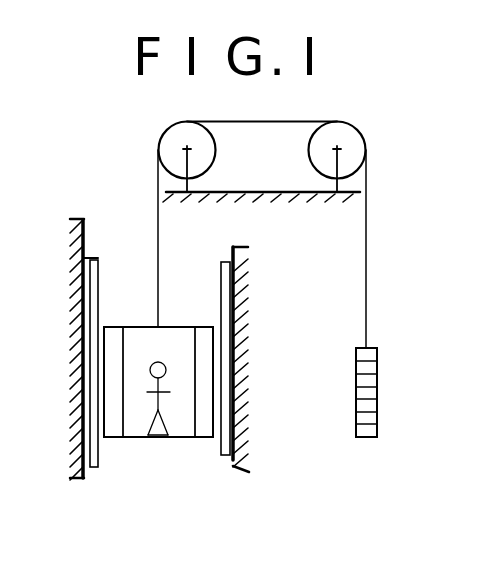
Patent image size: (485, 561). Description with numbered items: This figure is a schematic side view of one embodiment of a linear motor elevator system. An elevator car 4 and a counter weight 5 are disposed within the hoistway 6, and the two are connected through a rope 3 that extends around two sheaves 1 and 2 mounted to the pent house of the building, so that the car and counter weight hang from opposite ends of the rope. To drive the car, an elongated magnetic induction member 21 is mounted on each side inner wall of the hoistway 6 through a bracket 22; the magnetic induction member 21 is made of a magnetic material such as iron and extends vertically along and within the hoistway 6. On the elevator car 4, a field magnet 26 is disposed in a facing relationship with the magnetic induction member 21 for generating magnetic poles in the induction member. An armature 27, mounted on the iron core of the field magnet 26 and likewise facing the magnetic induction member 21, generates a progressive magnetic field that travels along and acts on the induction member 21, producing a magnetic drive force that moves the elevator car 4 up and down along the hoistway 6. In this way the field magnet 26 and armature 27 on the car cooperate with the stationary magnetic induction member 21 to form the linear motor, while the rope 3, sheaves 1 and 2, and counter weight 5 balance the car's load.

The sheave 1 is at (158, 140).
The sheave 2 is at (366, 142).
The rope 3 is at (366, 290).
The elevator car 4 is at (145, 327).
The counter weight 5 is at (377, 423).
The hoistway 6 is at (235, 423).
The magnetic induction member 21 is at (97, 258).
The bracket 22 is at (86, 258).
The field magnet 26 is at (113, 437).
The armature 27 is at (200, 437).